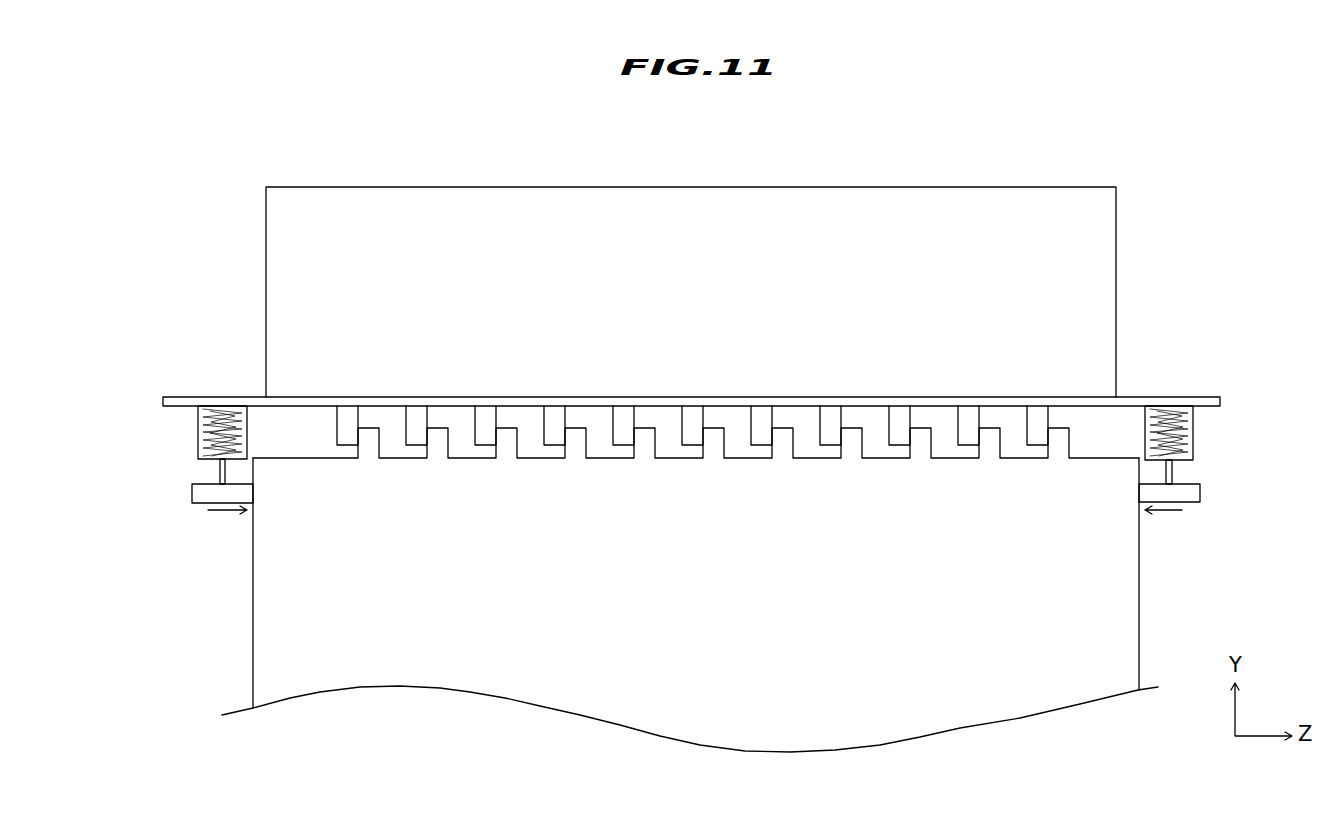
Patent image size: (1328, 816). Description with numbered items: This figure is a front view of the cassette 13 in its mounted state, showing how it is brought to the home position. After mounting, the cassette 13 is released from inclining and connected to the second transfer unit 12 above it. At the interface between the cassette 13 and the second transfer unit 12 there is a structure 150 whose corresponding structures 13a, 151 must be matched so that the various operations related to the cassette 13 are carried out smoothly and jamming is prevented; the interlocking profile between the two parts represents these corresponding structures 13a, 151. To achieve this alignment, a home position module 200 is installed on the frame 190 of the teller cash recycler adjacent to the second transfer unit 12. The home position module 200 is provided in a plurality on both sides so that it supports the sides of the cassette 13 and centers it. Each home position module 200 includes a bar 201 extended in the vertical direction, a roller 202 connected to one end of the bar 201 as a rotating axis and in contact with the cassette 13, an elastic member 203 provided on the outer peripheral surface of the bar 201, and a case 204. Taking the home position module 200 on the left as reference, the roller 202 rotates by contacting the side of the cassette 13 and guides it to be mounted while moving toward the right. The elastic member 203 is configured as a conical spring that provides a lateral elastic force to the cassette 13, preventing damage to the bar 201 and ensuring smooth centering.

The second transfer unit 12 is at (303, 171).
The structure 150 is at (557, 198).
The corresponding structure 151 is at (1033, 430).
The frame 190 is at (180, 397).
The cassette 13 is at (270, 615).
The corresponding structure 13a is at (1053, 442).
The home position module 200 is at (181, 438).
The bar 201 is at (218, 465).
The roller 202 is at (197, 493).
The elastic member 203 is at (233, 417).
The case 204 is at (197, 421).